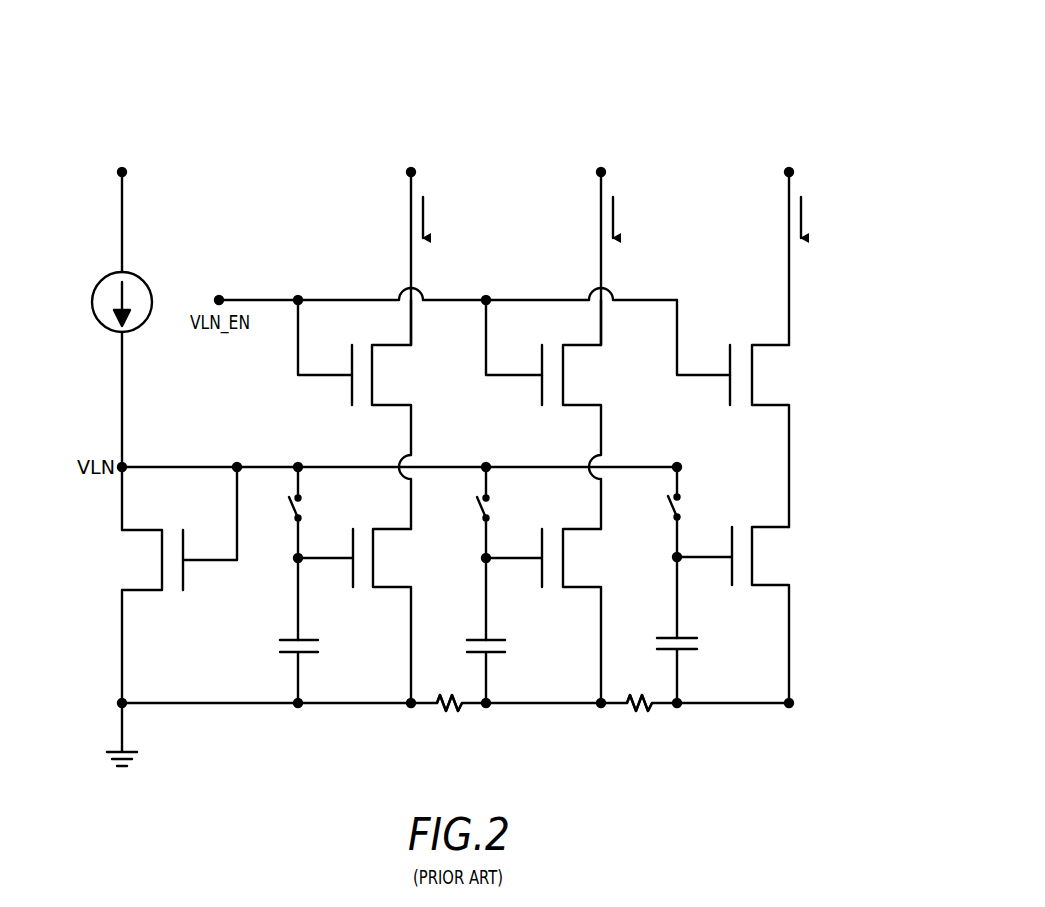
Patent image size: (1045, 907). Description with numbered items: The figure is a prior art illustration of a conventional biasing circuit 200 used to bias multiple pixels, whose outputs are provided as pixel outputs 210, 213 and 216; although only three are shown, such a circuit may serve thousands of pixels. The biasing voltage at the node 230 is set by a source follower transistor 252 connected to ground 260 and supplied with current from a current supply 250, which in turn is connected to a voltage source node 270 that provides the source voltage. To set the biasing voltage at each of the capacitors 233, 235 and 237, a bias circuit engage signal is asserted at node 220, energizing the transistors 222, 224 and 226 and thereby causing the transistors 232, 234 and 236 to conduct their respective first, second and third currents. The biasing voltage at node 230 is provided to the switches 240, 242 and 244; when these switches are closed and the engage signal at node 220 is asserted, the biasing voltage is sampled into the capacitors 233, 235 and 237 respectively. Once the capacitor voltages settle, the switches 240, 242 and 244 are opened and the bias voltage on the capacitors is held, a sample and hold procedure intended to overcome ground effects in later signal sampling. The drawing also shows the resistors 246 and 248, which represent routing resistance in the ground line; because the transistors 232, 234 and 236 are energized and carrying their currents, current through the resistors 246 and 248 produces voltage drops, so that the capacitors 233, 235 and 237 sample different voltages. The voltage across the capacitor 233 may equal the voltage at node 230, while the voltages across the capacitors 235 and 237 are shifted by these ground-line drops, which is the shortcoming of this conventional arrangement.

The biasing circuit 200 is at (793, 29).
The pixel output 210 is at (411, 169).
The pixel output 213 is at (601, 169).
The pixel output 216 is at (789, 169).
The node 220 is at (219, 298).
The transistor 222 is at (393, 403).
The transistor 224 is at (583, 403).
The transistor 226 is at (770, 403).
The node 230 is at (237, 465).
The transistor 232 is at (393, 586).
The capacitor 233 is at (310, 637).
The transistor 234 is at (583, 586).
The capacitor 235 is at (498, 637).
The transistor 236 is at (772, 585).
The capacitor 237 is at (690, 635).
The switch 240 is at (290, 506).
The switch 242 is at (478, 506).
The switch 244 is at (668, 506).
The resistor 246 is at (446, 712).
The resistor 248 is at (636, 712).
The current supply 250 is at (91, 302).
The source follower transistor 252 is at (141, 533).
The ground 260 is at (128, 752).
The voltage source node 270 is at (122, 169).